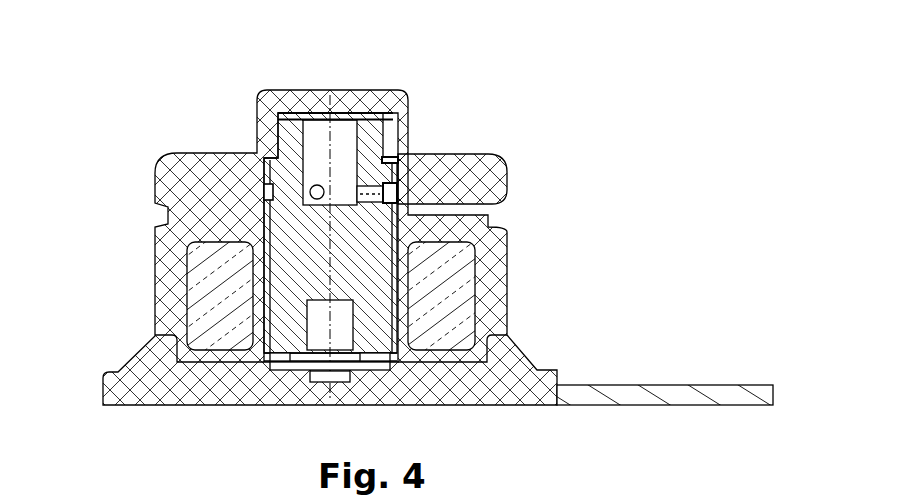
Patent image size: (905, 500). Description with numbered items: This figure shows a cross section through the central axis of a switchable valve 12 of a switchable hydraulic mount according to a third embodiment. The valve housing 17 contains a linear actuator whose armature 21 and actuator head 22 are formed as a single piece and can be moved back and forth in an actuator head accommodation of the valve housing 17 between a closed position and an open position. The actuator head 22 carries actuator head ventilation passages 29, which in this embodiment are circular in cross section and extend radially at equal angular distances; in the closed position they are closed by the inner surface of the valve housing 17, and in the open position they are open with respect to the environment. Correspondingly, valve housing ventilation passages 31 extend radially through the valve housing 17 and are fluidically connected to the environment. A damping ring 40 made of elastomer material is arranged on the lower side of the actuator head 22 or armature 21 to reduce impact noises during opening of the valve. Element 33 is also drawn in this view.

The switchable valve 12 is at (313, 233).
The valve housing 17 is at (197, 183).
The armature 21 is at (506, 155).
The actuator head 22 is at (476, 177).
The actuator head ventilation passage 29 is at (357, 160).
The valve housing ventilation passage 31 is at (508, 263).
The mounting plate 33 is at (668, 390).
The damping ring 40 is at (283, 373).